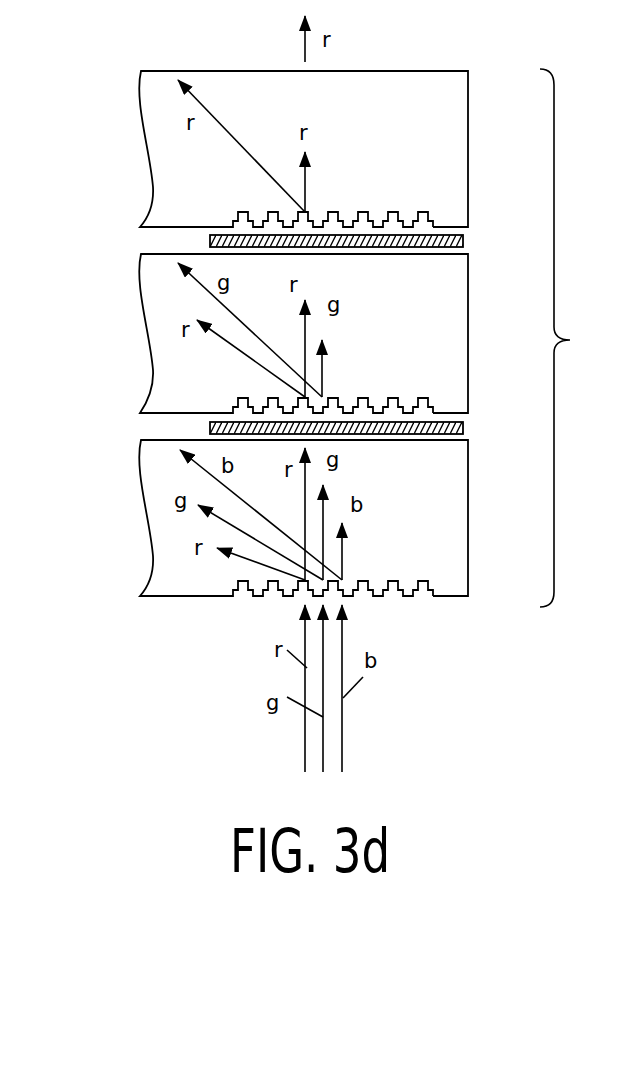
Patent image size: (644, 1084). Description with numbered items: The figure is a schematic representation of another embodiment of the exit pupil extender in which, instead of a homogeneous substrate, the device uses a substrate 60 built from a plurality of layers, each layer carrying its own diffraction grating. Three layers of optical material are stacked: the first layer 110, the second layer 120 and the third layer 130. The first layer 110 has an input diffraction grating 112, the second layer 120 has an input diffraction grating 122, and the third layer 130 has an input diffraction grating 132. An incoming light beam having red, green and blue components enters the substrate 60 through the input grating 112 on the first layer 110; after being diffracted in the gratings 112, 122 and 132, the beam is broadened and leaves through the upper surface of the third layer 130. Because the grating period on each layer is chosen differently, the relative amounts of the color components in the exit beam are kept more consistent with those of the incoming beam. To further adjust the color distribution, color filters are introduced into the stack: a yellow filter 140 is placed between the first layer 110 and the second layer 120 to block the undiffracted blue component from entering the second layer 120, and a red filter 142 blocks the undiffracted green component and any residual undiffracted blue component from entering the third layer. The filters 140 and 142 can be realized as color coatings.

The substrate 60 is at (587, 338).
The first layer 110 is at (460, 512).
The input diffraction grating 112 is at (371, 545).
The second layer 120 is at (458, 330).
The input diffraction grating 122 is at (369, 362).
The third layer 130 is at (458, 143).
The input diffraction grating 132 is at (369, 175).
The yellow filter 140 is at (465, 427).
The red filter 142 is at (465, 241).